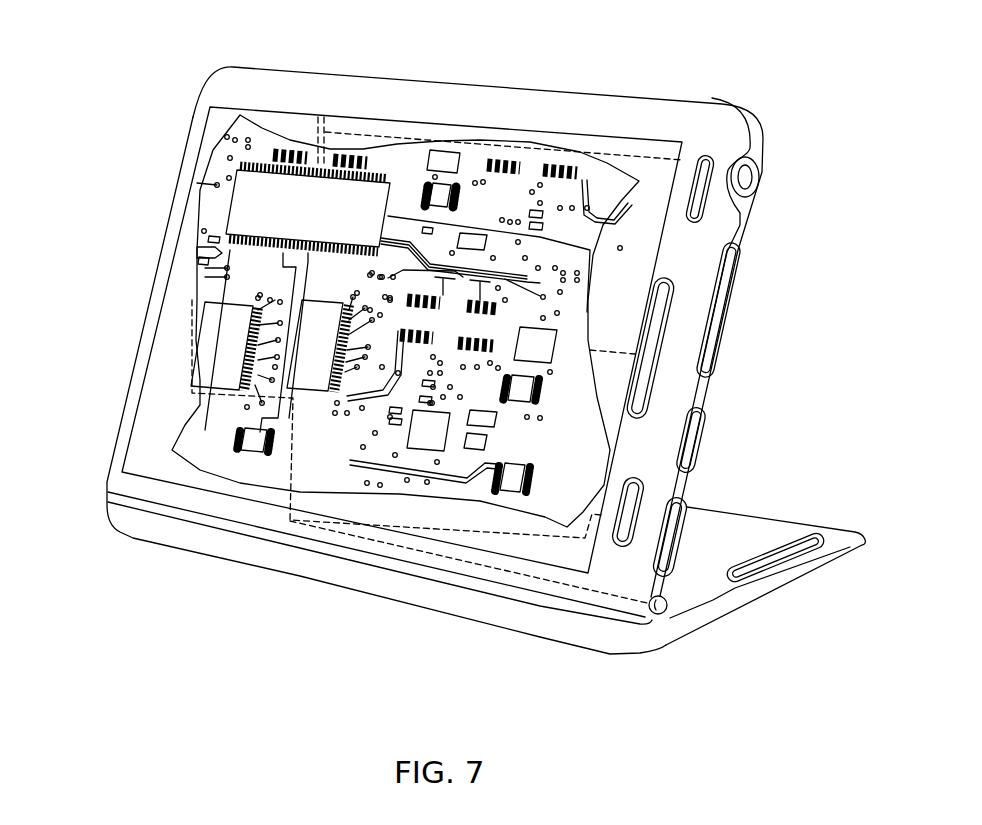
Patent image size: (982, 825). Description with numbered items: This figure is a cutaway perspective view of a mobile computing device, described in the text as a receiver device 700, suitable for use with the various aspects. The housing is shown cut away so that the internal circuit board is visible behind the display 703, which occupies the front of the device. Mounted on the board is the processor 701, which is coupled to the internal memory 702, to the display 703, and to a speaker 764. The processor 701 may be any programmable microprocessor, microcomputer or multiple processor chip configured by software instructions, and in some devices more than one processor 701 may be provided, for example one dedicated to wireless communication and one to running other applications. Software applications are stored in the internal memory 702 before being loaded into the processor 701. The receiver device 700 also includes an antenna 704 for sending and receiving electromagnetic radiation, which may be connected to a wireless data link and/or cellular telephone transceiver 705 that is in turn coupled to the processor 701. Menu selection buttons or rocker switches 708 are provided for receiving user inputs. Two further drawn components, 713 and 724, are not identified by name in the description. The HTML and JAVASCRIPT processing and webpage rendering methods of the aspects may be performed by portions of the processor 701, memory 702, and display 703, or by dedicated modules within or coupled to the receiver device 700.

The receiver device 700 is at (90, 106).
The processor 701 is at (325, 220).
The internal memory 702 is at (247, 330).
The display 703 is at (553, 132).
The antenna 704 is at (659, 615).
The wireless data link and/or cellular telephone transceiver 705 is at (337, 343).
The menu selection buttons or rocker switches 708 is at (707, 197).
The integrated circuit 713 is at (518, 465).
The camera aperture / sensor chip 724 is at (757, 175).
The speaker 764 is at (668, 280).